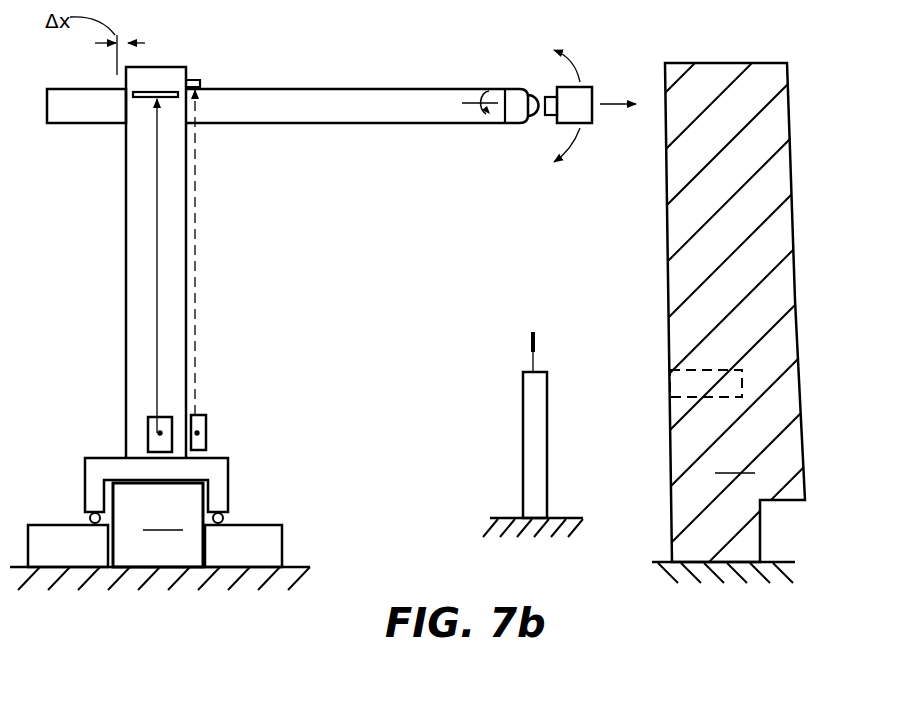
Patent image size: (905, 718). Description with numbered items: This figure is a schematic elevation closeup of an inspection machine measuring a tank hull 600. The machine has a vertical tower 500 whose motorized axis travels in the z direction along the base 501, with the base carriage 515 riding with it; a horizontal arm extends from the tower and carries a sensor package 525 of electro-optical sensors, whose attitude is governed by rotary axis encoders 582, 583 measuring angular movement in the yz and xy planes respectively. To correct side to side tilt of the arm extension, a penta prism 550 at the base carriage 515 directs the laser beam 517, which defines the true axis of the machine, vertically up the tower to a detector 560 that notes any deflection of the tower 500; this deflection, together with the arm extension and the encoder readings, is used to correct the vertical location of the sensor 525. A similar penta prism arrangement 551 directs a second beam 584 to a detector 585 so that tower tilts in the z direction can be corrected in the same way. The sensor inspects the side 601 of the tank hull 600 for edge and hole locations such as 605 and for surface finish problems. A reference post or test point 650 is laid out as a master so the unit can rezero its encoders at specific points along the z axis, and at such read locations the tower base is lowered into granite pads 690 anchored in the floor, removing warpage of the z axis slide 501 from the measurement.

The tower 500 is at (146, 313).
The base 501 is at (158, 525).
The base carriage 515 is at (232, 488).
The laser beam 517 is at (160, 433).
The sensor package 525 is at (590, 86).
The penta prism 550 is at (148, 420).
The penta prism arrangement 551 is at (200, 433).
The detector 560 is at (158, 92).
The rotary axis encoder 582 is at (512, 125).
The rotary axis encoder 583 is at (535, 93).
The beam 584 is at (200, 270).
The detector 585 is at (200, 80).
The tank hull 600 is at (740, 331).
The side 601 is at (670, 530).
The hole location 605 is at (670, 370).
The test point 650 is at (535, 338).
The granite pad 690 is at (285, 530).